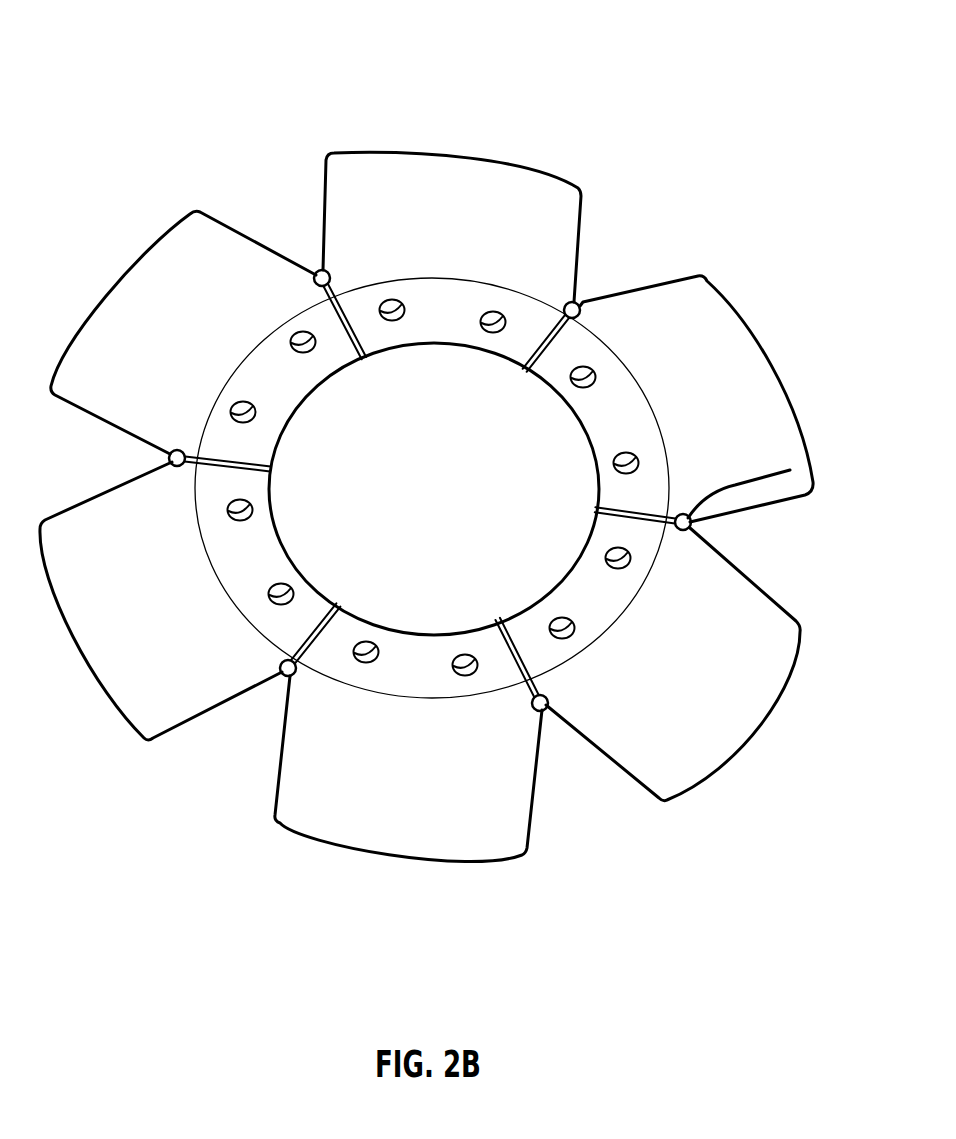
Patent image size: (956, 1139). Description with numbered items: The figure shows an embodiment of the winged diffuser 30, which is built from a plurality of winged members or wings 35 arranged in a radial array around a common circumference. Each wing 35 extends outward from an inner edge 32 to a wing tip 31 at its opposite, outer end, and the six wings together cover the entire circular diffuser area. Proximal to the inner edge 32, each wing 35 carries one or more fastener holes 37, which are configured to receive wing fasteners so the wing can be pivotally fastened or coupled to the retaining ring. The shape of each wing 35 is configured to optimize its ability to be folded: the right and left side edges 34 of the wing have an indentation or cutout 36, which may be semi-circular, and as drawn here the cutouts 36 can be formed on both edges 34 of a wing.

The winged diffuser 30 is at (178, 55).
The wing tip 31 is at (763, 347).
The inner edge 32 is at (563, 421).
The side edge 34 is at (92, 498).
The wing 35 is at (445, 178).
The cutout 36 is at (790, 470).
The fastener hole 37 is at (552, 620).